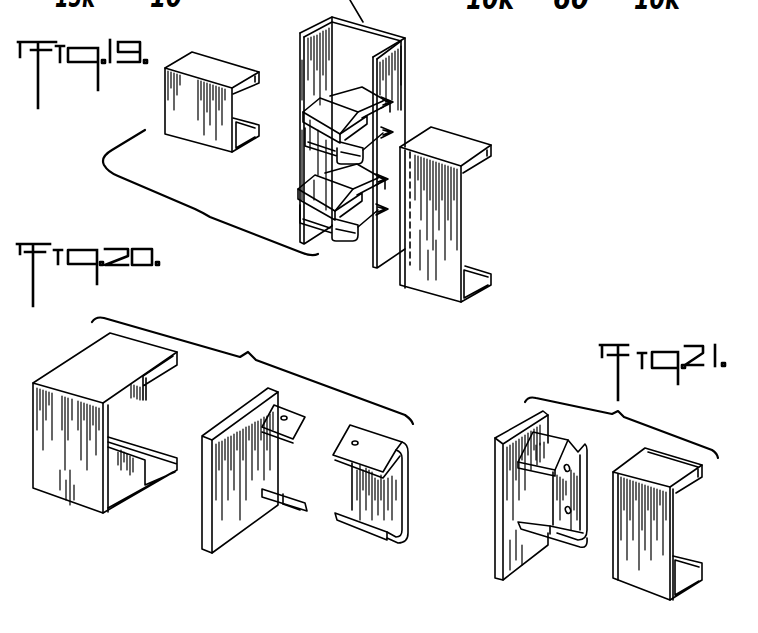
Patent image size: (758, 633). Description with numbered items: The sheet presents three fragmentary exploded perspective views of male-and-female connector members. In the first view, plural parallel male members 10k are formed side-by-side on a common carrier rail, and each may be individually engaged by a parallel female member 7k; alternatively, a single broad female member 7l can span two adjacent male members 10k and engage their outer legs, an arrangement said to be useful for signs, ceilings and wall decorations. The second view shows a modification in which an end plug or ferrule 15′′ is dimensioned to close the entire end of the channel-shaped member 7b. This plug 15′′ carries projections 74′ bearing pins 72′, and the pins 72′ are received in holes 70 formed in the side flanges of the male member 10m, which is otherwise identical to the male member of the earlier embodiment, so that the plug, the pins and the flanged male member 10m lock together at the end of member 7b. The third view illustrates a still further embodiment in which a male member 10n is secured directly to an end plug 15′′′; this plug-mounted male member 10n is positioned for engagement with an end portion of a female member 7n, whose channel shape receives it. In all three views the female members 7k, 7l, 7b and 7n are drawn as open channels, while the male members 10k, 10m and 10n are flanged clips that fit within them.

In FIG. 19, the female member 7k is at (188, 133).
In FIG. 19, the male member 10k is at (313, 112).
In FIG. 19, the broad female member 7l is at (447, 137).
In FIG. 20, the member 7b is at (77, 503).
In FIG. 20, the end plug 15′′ is at (222, 398).
In FIG. 20, the pin 72′ is at (292, 412).
In FIG. 20, the projection 74′ is at (306, 506).
In FIG. 20, the clip plate with hole 70 is at (354, 447).
In FIG. 20, the male member 10m is at (417, 488).
In FIG. 21, the end plug 15′′′ is at (503, 578).
In FIG. 21, the male member 10n is at (570, 547).
In FIG. 21, the female member 7n is at (623, 575).